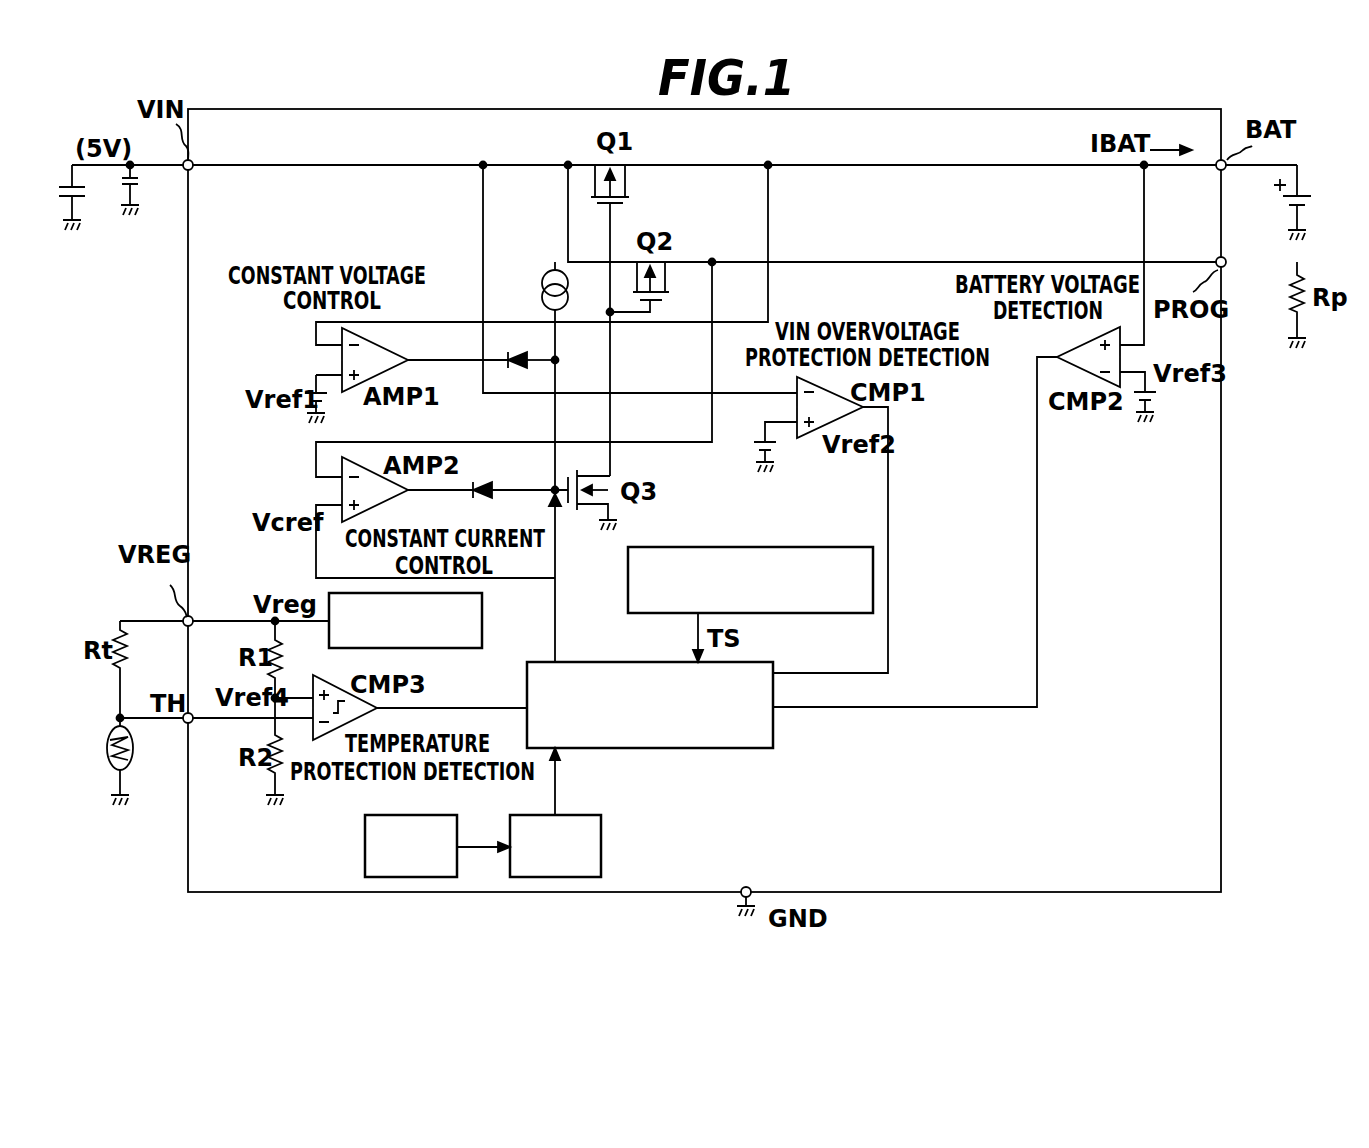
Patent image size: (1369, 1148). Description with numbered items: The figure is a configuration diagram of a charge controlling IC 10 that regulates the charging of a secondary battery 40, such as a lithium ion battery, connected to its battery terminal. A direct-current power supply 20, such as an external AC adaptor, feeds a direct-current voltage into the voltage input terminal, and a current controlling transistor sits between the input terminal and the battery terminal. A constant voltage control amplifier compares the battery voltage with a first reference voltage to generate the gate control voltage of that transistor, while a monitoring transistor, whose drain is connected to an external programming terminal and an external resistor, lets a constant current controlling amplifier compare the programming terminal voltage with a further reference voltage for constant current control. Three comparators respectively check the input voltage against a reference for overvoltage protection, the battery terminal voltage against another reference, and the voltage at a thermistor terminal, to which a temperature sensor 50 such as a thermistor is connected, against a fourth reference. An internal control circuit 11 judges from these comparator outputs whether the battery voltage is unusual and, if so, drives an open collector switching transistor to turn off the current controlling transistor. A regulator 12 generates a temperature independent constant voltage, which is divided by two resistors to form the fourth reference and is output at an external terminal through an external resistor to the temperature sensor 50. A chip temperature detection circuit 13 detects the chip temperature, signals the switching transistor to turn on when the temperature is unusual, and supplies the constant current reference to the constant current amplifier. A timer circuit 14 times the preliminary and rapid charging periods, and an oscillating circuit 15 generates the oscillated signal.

The charge controlling IC 10 is at (1222, 693).
The internal control circuit 11 is at (757, 750).
The regulator 12 is at (452, 652).
The chip temperature detection circuit 13 is at (808, 546).
The timer circuit 14 is at (602, 838).
The oscillating circuit 15 is at (366, 838).
The direct-current power supply 20 is at (82, 200).
The secondary battery 40 is at (1304, 192).
The temperature sensor 50 is at (110, 764).